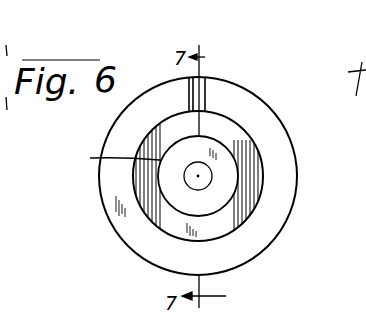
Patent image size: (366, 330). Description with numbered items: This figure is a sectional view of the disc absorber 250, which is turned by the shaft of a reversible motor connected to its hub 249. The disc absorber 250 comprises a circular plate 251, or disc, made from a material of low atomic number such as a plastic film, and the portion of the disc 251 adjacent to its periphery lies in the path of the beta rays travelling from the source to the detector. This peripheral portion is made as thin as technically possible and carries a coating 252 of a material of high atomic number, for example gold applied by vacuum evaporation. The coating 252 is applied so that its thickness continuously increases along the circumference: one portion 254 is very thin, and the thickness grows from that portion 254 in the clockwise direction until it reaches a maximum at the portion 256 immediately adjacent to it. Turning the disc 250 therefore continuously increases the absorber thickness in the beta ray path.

The hub 249 is at (103, 161).
The disc absorber 250 is at (296, 146).
The circular plate 251 is at (256, 174).
The coating 252 is at (283, 204).
The very thin portion of coating 254 is at (241, 92).
The maximum thickness portion of coating 256 is at (153, 93).